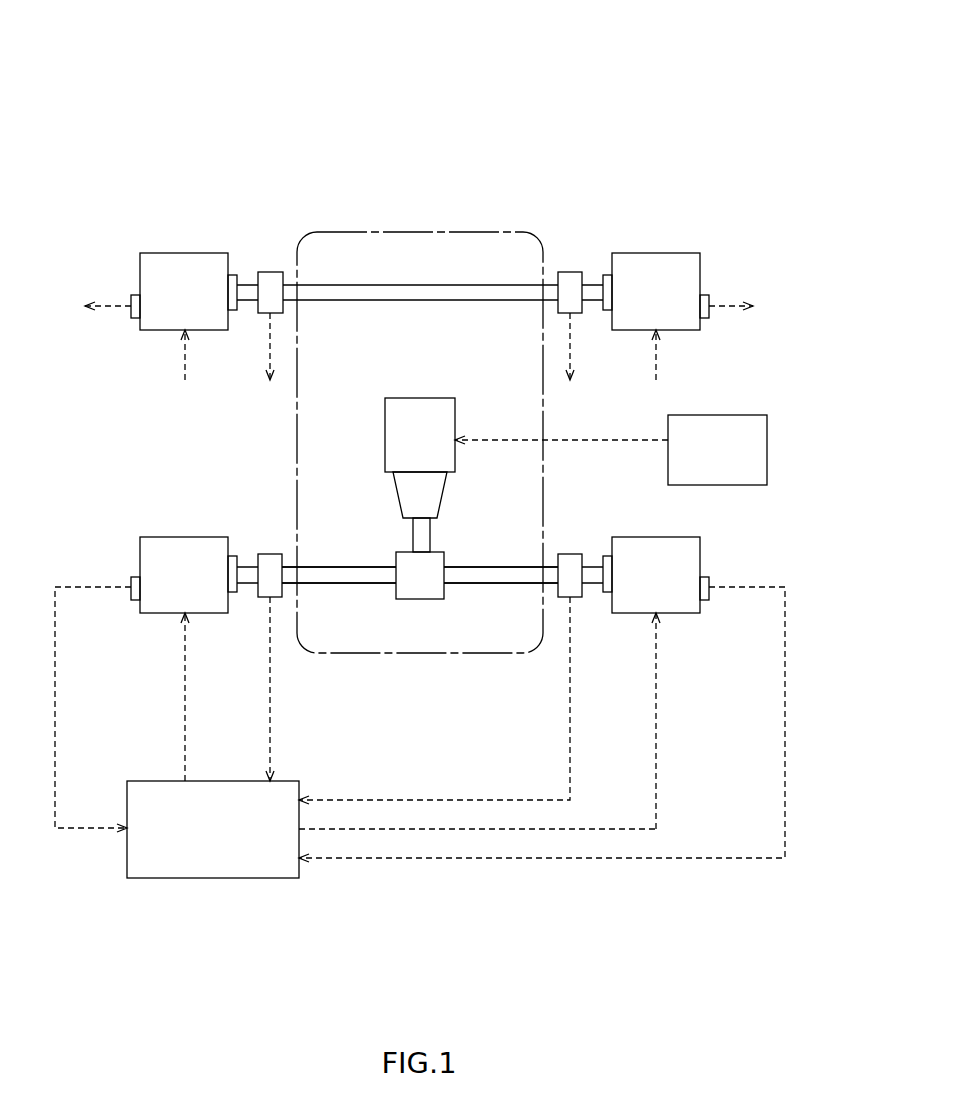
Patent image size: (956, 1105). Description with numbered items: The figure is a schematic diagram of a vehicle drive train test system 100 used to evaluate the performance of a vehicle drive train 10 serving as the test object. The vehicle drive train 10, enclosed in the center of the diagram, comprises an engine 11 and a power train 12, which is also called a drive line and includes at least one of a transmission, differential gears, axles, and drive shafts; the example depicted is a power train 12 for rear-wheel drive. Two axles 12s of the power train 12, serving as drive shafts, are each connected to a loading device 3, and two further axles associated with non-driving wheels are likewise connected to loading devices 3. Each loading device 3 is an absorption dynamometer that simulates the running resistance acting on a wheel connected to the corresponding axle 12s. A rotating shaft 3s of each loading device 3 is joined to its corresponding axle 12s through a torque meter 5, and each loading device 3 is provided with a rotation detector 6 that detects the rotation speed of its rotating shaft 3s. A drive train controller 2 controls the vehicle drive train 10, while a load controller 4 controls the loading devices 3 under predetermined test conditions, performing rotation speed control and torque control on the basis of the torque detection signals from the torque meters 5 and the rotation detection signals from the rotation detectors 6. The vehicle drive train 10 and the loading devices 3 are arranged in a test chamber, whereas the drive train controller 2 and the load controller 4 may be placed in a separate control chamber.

The vehicle drive train test system 100 is at (202, 78).
The drive train controller 2 is at (768, 449).
The loading device 3 is at (140, 262).
The rotating shaft 3s is at (250, 300).
The load controller 4 is at (213, 878).
The torque meter 5 is at (271, 271).
The rotation detector 6 is at (137, 318).
The vehicle drive train 10 is at (455, 655).
The engine 11 is at (422, 398).
The power train 12 is at (376, 526).
The axle 12s is at (338, 583).